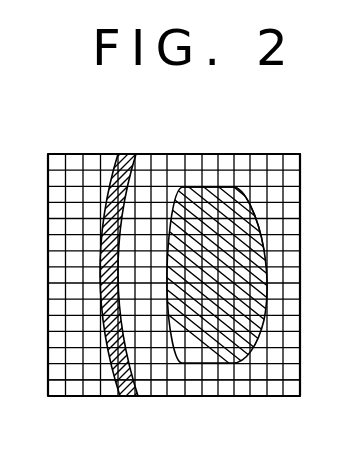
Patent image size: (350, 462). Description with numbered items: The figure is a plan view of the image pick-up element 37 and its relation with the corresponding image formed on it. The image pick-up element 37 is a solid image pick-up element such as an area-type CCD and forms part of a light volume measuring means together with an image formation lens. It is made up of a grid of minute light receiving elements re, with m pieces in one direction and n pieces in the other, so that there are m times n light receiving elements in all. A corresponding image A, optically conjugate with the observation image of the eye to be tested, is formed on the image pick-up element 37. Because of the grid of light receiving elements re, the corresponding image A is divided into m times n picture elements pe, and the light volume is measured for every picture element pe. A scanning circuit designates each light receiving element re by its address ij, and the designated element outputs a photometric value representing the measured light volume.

The image pick-up element 37 is at (50, 281).
The address ij is at (102, 315).
The picture element pe is at (197, 365).
The minute light receiving element re is at (93, 383).
The corresponding image A is at (242, 188).
The number of light receiving elements in one direction m is at (298, 149).
The number of light receiving elements in the other direction n is at (306, 398).